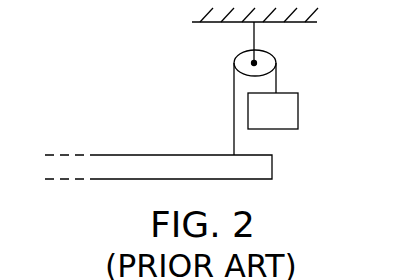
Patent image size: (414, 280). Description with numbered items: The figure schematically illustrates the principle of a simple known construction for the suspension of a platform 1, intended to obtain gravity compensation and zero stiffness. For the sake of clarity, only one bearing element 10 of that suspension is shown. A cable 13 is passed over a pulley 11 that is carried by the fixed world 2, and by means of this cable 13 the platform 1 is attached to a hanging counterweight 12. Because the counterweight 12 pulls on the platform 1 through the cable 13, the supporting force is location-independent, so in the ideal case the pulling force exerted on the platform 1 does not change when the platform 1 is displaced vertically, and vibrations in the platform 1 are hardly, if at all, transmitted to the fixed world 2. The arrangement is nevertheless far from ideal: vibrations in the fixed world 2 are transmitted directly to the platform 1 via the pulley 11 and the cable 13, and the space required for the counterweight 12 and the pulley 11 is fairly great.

The platform 1 is at (110, 155).
The fixed world 2 is at (308, 22).
The bearing element 10 is at (130, 65).
The pulley 11 is at (239, 57).
The counterweight 12 is at (298, 103).
The cable 13 is at (234, 124).